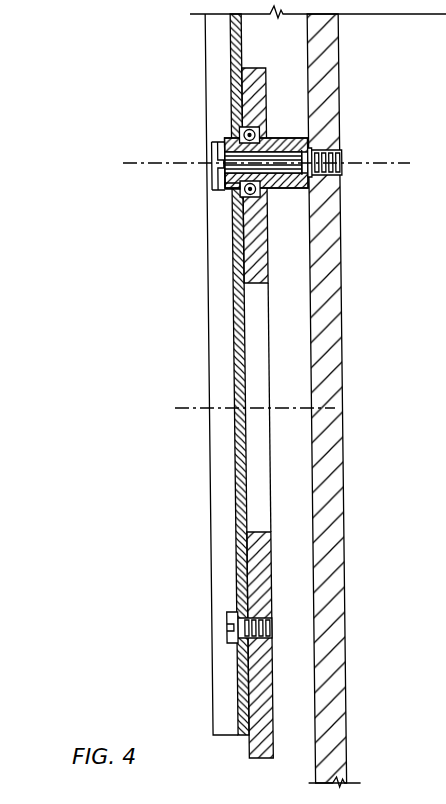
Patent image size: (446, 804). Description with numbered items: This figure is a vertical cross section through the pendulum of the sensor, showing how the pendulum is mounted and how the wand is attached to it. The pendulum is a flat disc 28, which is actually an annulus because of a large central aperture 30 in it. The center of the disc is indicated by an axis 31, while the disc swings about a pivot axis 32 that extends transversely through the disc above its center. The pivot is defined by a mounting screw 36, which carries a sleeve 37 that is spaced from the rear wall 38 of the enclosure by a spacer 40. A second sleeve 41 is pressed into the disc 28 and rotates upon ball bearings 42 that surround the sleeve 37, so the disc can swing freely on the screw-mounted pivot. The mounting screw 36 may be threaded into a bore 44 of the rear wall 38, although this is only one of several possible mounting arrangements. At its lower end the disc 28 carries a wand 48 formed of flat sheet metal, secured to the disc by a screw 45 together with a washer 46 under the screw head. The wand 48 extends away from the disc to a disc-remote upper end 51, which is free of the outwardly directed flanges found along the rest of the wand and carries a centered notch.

The flat disc 28 is at (248, 675).
The central aperture 30 is at (250, 288).
The axis 31 is at (200, 418).
The pivot axis 32 is at (180, 166).
The mounting screw 36 is at (212, 142).
The sleeve 37 is at (228, 137).
The rear wall 38 is at (305, 51).
The spacer 40 is at (283, 138).
The sleeve 41 is at (267, 124).
The ball bearings 42 is at (267, 191).
The bore 44 is at (342, 158).
The screw 45 is at (227, 615).
The washer 46 is at (222, 190).
The wand 48 is at (207, 265).
The upper end 51 is at (233, 345).